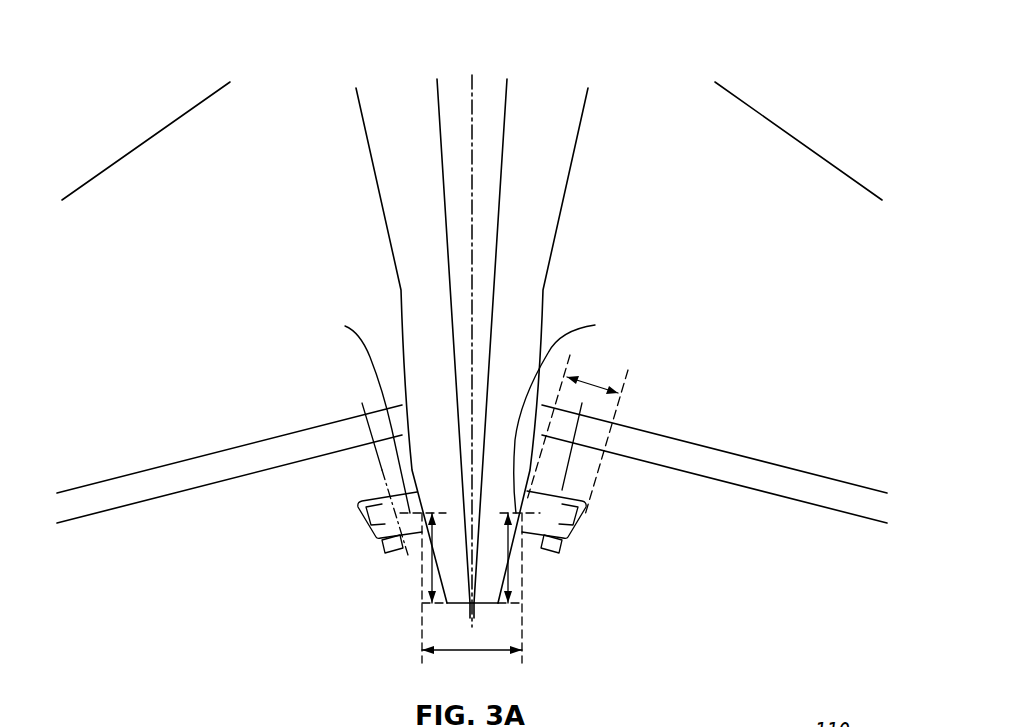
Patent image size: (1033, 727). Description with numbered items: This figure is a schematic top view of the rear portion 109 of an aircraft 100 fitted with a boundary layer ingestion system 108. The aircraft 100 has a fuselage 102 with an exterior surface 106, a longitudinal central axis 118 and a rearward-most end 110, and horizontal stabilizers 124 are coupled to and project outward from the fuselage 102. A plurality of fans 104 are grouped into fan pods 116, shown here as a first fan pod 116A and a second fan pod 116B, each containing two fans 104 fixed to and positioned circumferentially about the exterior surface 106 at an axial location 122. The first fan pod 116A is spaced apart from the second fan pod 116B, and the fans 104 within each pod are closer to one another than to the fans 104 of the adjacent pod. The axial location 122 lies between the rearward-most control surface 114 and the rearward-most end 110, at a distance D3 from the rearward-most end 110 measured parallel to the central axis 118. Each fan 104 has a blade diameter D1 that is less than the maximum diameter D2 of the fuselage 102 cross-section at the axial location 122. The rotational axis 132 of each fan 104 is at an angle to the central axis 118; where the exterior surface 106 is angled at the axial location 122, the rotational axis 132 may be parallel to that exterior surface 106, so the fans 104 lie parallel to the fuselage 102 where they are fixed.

The aircraft 100 is at (766, 50).
The fuselage 102 is at (582, 129).
The fans 104 is at (383, 527).
The exterior surface 106 is at (560, 222).
The boundary layer ingestion system 108 is at (591, 515).
The rear portion 109 is at (411, 103).
The rearward-most end 110 is at (462, 604).
The rearward-most control surface 114 is at (207, 473).
The fan pods 116 is at (370, 494).
The first fan pod 116A is at (372, 508).
The second fan pod 116B is at (565, 518).
The central axis 118 is at (486, 350).
The axial location 122 is at (466, 412).
The horizontal stabilizers 124 is at (180, 155).
The rotational axis 132 is at (372, 425).
The diameter of fan blades D1 is at (590, 384).
The maximum diameter of fuselage cross-section D2 is at (462, 652).
The distance from rearward-most end D3 is at (535, 550).